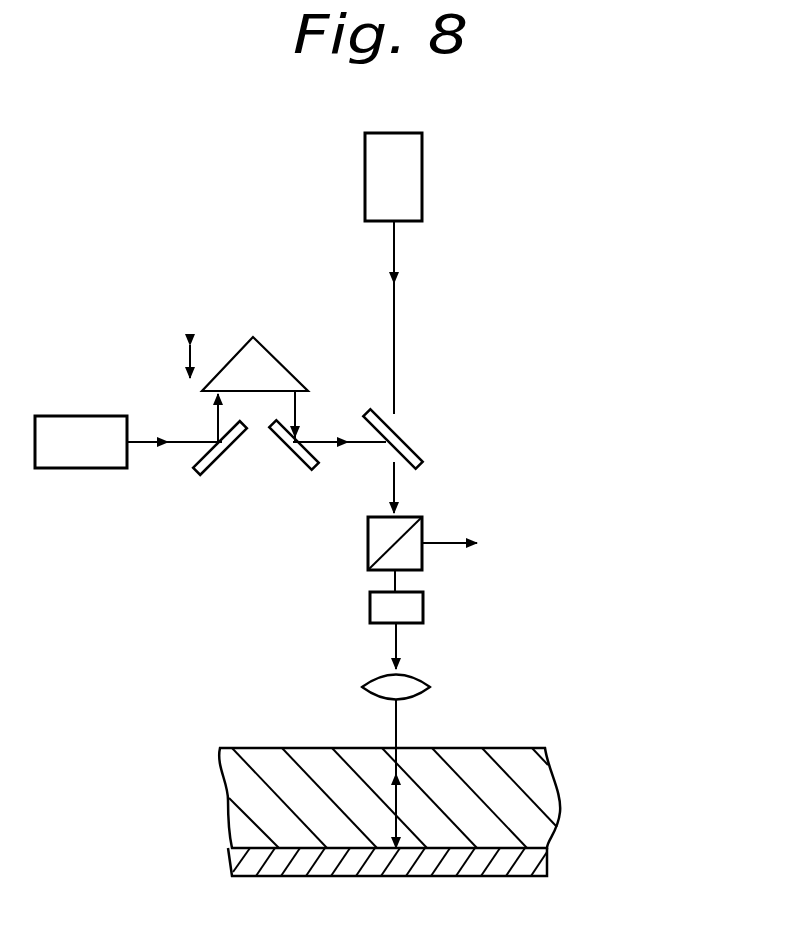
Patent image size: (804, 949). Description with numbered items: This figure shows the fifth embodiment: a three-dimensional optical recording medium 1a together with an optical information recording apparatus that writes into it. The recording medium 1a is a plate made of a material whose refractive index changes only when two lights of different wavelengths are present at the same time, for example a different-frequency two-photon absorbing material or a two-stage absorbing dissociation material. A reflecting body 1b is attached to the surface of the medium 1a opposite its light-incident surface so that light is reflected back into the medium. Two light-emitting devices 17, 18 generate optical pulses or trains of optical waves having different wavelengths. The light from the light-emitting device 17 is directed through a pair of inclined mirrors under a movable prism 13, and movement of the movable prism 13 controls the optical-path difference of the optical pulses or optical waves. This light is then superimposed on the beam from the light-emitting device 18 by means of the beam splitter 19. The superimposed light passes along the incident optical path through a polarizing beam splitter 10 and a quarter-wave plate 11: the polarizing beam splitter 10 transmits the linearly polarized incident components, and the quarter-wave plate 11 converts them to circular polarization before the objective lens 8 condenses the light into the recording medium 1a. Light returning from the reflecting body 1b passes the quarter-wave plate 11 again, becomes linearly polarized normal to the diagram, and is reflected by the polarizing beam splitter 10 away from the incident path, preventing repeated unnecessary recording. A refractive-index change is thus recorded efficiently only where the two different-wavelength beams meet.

The light-emitting device 18 is at (422, 165).
The beam splitter 19 is at (420, 454).
The light-emitting device 17 is at (90, 416).
The movable prism 13 is at (277, 357).
The polarizing beam splitter 10 is at (368, 535).
The quarter-wave plate 11 is at (370, 609).
The objective lens 8 is at (430, 687).
The three-dimensional optical recording medium 1a is at (548, 770).
The reflecting body 1b is at (497, 876).